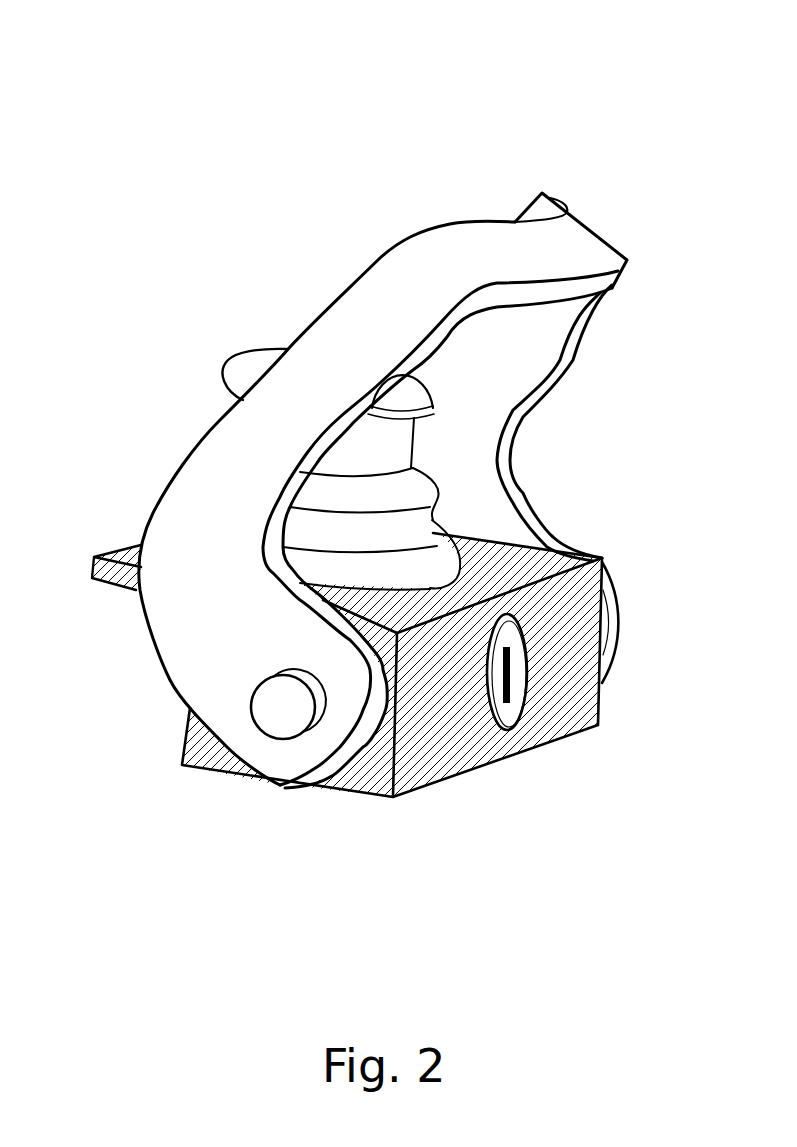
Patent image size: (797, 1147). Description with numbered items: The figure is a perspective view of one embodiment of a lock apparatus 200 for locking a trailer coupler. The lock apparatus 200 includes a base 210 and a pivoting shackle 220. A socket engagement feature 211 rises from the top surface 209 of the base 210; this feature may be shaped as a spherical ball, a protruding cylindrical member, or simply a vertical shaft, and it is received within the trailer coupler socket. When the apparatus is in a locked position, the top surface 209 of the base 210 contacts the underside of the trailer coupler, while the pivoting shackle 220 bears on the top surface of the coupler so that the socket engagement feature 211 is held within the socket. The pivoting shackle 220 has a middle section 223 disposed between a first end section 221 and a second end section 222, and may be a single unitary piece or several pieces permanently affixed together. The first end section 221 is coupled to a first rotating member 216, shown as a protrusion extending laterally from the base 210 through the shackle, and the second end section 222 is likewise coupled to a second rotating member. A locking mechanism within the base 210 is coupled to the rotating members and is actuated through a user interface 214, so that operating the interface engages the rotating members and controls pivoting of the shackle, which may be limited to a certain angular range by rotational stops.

The lock apparatus 200 is at (96, 69).
The top surface 209 is at (542, 560).
The base 210 is at (450, 760).
The socket engagement feature 211 is at (242, 375).
The user interface 214 is at (523, 720).
The first rotating member 216 is at (283, 708).
The pivoting shackle 220 is at (410, 202).
The first end section 221 is at (172, 658).
The second end section 222 is at (610, 598).
The middle section 223 is at (588, 247).